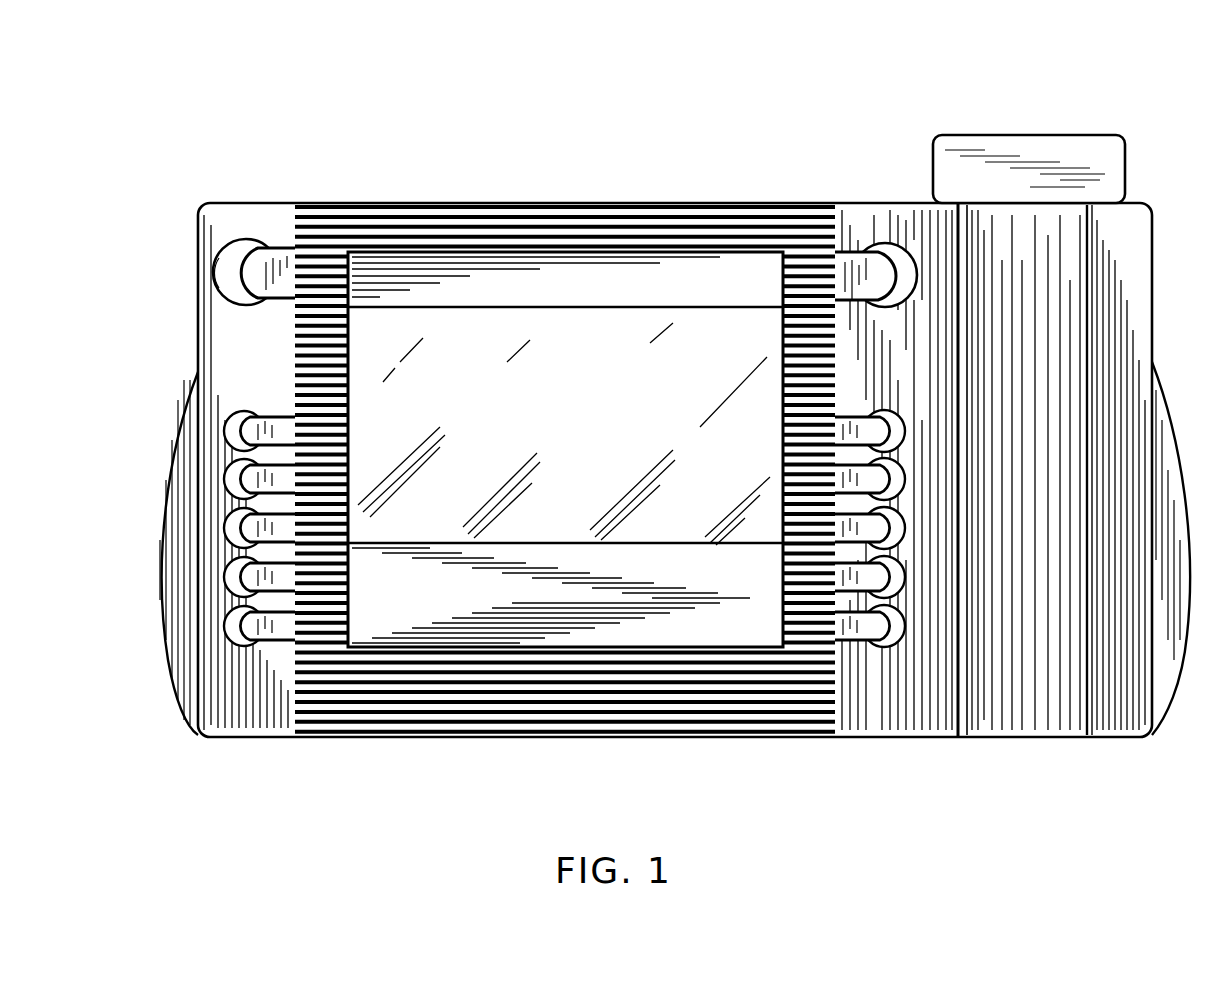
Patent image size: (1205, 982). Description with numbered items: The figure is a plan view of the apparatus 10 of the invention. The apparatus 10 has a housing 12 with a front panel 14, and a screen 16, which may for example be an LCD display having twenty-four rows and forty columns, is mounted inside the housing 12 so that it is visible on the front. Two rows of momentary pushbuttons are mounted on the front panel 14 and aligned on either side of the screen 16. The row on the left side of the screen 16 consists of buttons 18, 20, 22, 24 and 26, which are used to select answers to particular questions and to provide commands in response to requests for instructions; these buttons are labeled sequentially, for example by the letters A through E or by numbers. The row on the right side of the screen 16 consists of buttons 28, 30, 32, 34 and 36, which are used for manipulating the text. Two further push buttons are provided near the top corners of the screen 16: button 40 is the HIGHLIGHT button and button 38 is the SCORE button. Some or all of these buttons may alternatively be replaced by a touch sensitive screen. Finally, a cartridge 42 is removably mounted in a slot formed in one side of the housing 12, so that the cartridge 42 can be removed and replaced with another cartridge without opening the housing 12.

The apparatus 10 is at (701, 168).
The housing 12 is at (324, 718).
The front panel 14 is at (483, 686).
The screen 16 is at (683, 510).
The button 18 is at (226, 430).
The button 20 is at (226, 478).
The button 22 is at (226, 527).
The button 24 is at (226, 577).
The button 26 is at (228, 626).
The button 28 is at (870, 415).
The button 30 is at (904, 472).
The button 32 is at (903, 541).
The button 34 is at (902, 582).
The button 36 is at (878, 630).
The SCORE button 38 is at (888, 256).
The HIGHLIGHT button 40 is at (190, 294).
The cartridge 42 is at (1043, 140).